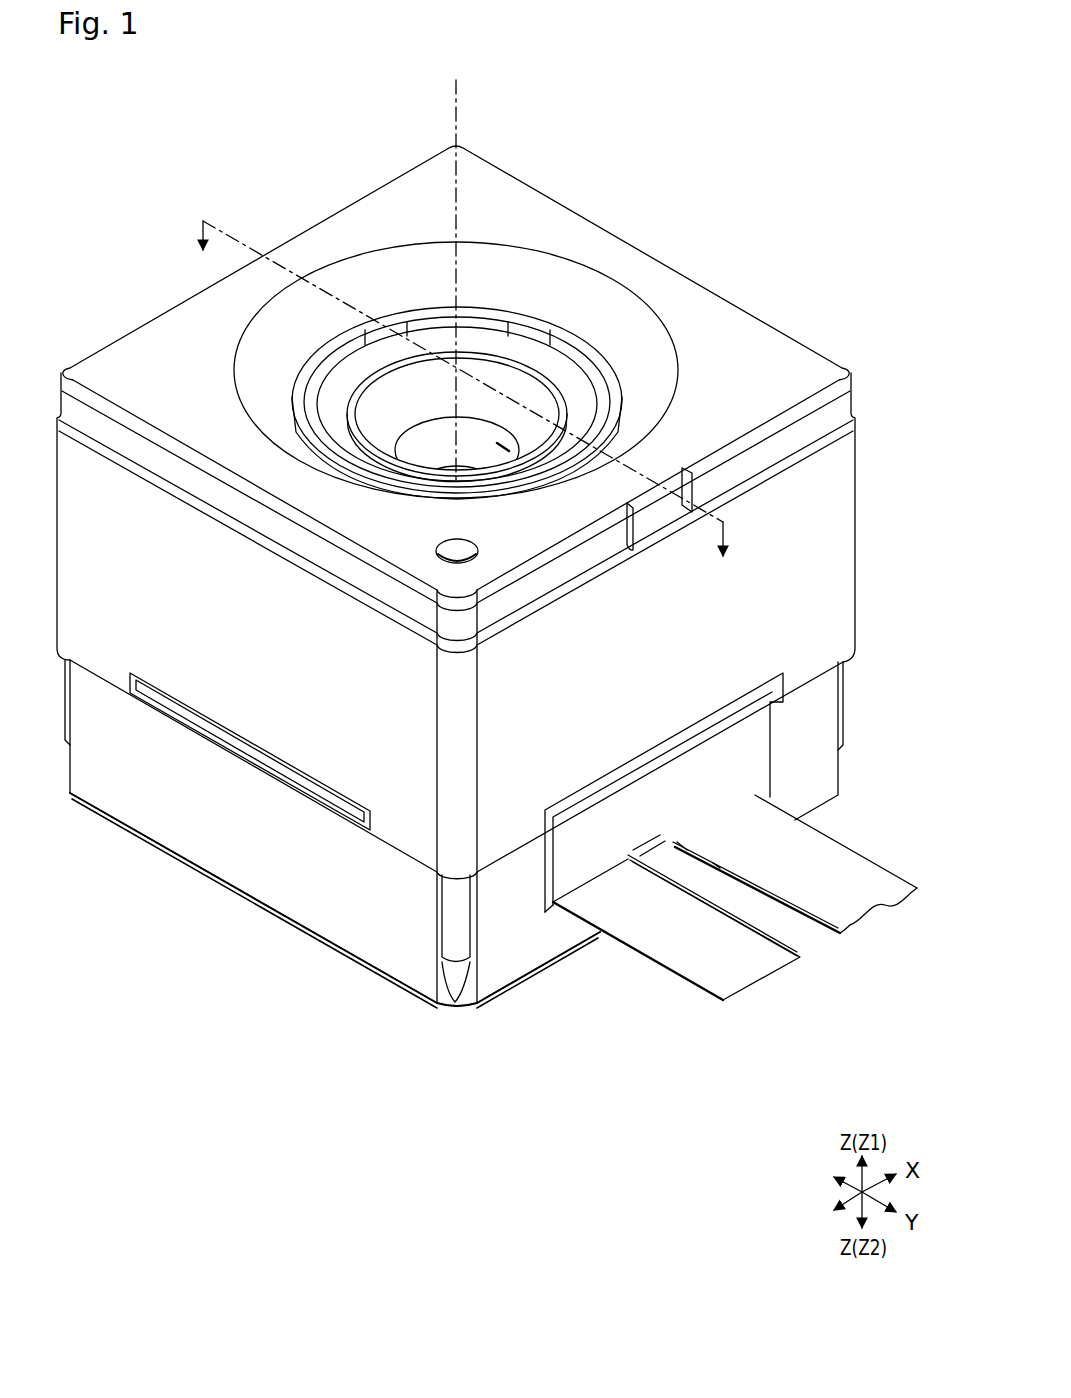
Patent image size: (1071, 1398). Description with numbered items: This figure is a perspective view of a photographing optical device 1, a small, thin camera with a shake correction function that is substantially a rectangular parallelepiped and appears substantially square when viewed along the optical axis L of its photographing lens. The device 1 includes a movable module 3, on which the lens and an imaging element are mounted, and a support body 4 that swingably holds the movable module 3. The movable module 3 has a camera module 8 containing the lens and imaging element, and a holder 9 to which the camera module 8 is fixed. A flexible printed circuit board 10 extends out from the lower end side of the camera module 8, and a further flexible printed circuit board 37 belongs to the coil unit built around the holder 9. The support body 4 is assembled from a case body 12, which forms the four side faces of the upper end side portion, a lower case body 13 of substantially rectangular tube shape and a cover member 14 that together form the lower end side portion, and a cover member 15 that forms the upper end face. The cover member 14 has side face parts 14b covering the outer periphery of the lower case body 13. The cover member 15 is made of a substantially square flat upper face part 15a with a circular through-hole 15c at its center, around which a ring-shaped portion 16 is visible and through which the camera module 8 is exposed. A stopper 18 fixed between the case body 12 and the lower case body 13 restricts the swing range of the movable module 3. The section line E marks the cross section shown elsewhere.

The photographing optical device 1 is at (456, 555).
The movable module 3 is at (457, 342).
The holder 9 is at (478, 367).
The support body 4 is at (453, 834).
The case body 12 is at (115, 692).
The camera module 8 is at (433, 447).
The flexible printed circuit board 10 is at (665, 970).
The lower case body 13 is at (600, 883).
The cover member 14 is at (367, 968).
The side face part 14b is at (455, 1003).
The cover member 15 is at (456, 573).
The upper face part 15a is at (367, 195).
The through-hole 15c is at (527, 320).
The ring-shaped portion 16 is at (578, 380).
The stopper 18 is at (308, 797).
The flexible printed circuit board 37 is at (760, 936).
The optical axis L is at (457, 97).
The E-E cross section line E is at (464, 388).